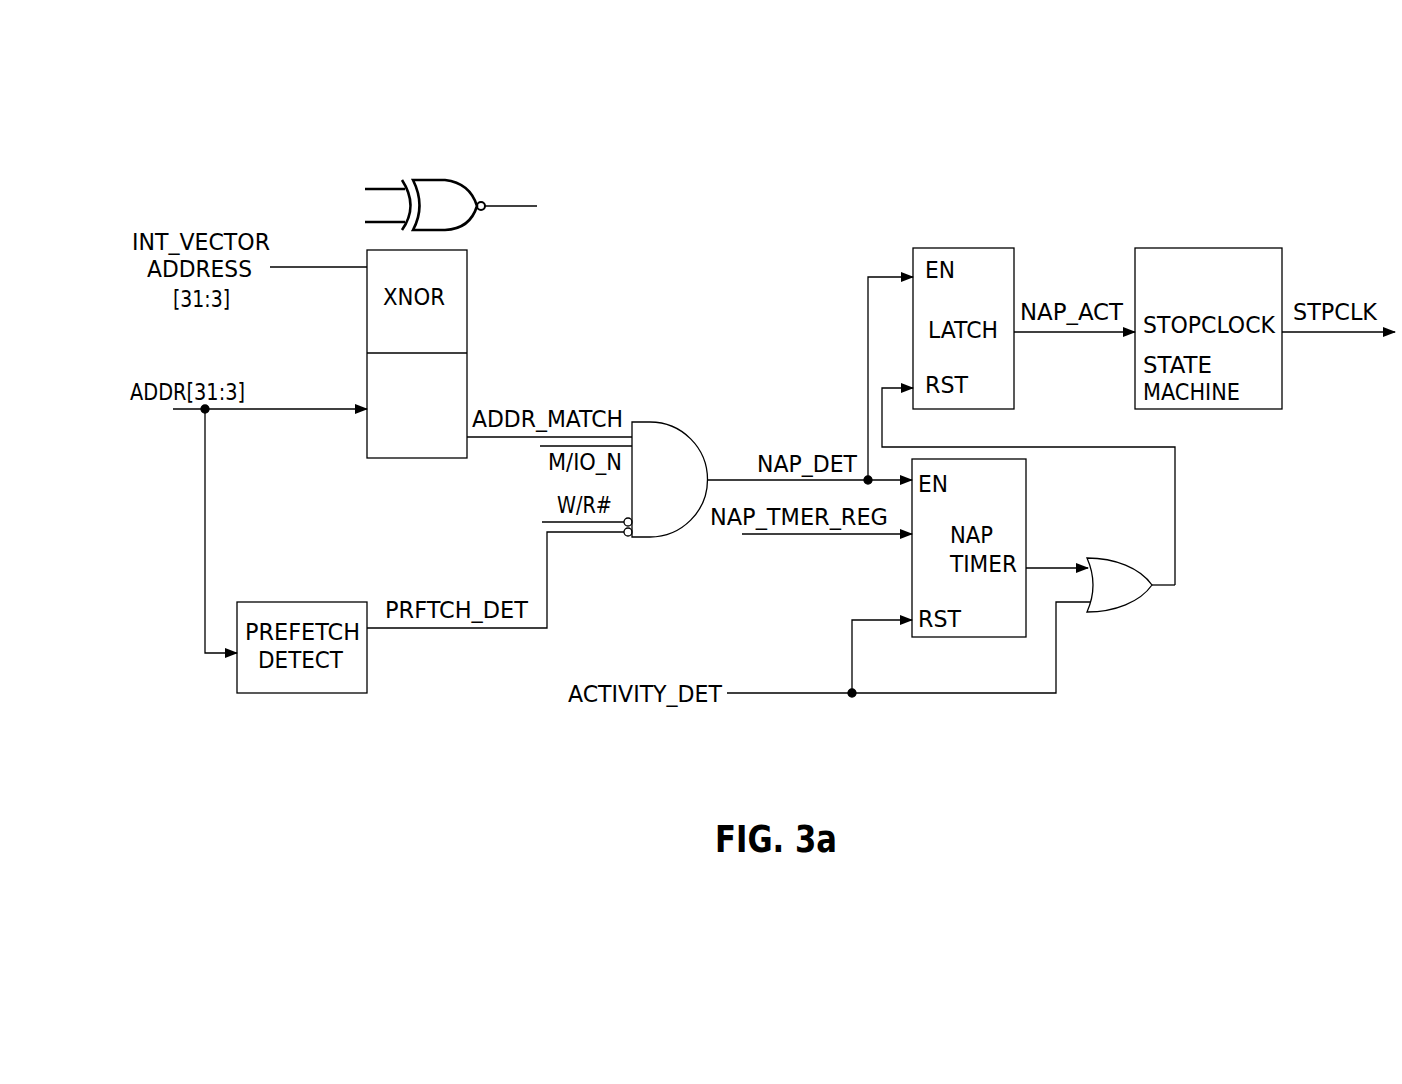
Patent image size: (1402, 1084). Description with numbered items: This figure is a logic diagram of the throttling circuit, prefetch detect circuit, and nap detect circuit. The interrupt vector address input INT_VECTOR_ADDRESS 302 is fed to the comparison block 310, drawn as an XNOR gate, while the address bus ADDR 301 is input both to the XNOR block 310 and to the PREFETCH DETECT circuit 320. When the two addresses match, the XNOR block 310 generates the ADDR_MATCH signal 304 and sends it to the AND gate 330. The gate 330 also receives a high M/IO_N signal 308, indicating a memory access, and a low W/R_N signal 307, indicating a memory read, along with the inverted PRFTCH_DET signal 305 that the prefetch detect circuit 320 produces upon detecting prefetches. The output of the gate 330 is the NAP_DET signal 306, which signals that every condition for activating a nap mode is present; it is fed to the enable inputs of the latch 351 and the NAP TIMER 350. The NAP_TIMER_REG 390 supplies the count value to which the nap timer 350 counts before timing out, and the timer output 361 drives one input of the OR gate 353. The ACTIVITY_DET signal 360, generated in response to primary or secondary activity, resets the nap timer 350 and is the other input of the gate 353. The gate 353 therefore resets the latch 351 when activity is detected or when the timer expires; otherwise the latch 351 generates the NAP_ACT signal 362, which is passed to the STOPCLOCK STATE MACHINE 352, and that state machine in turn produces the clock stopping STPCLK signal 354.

The ADDR[31:3] 301 is at (205, 528).
The INT_VECTOR_ADDRESS[31:3] 302 is at (320, 265).
The ADDR_MATCH signal 304 is at (627, 433).
The PRFTCH_DET signal 305 is at (445, 632).
The NAP_DET signal 306 is at (743, 478).
The W/R_N signal 307 is at (542, 522).
The M/IO_N signal 308 is at (540, 446).
The comparison block 310 is at (468, 297).
The PREFETCH DETECT circuit 320 is at (303, 693).
The gate 330 is at (672, 540).
The NAP TIMER 350 is at (908, 578).
The latch 351 is at (965, 248).
The STOPCLOCK STATE MACHINE 352 is at (1188, 248).
The gate 353 is at (1128, 613).
The STPCLK signal 354 is at (1332, 335).
The ACTIVITY_DET signal 360 is at (933, 697).
The nap timer output signal 361 is at (1048, 567).
The NAP_ACT signal 362 is at (1090, 335).
The NAP_TIMER_REG 390 is at (782, 536).